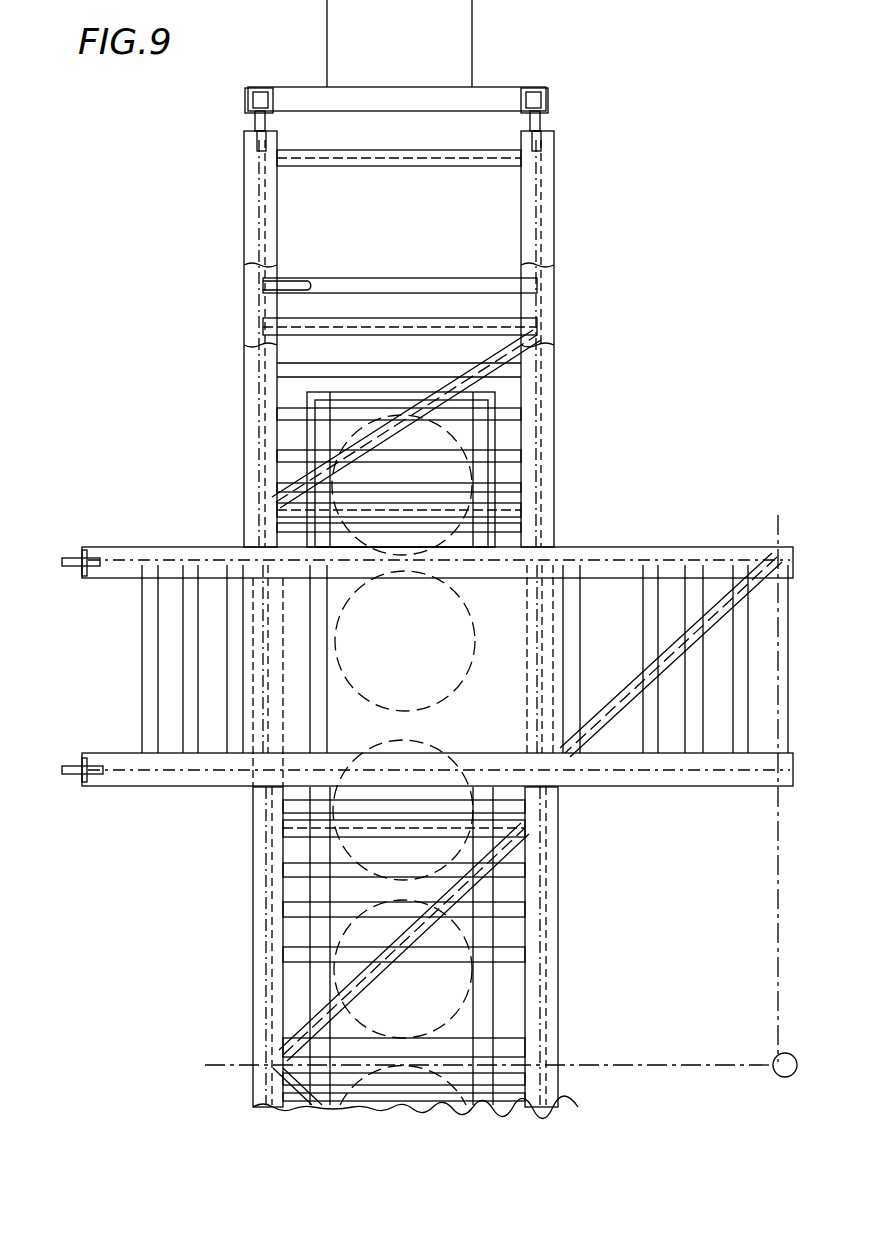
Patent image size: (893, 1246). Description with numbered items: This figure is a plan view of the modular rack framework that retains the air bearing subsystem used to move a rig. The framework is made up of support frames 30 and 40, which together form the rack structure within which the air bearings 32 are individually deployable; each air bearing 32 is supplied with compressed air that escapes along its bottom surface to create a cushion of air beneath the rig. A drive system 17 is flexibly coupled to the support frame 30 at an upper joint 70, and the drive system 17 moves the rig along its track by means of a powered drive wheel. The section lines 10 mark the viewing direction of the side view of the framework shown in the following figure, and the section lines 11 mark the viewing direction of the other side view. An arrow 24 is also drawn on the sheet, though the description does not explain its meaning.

The section lines 10- 10 is at (492, 477).
The section lines 11- 11 is at (215, 968).
The drive system 17 is at (457, 25).
The direction of travel 24 is at (132, 946).
The support frame 30 is at (555, 212).
The air bearing 32 is at (478, 540).
The support frame 40 is at (648, 548).
The upper joint 70 is at (250, 122).